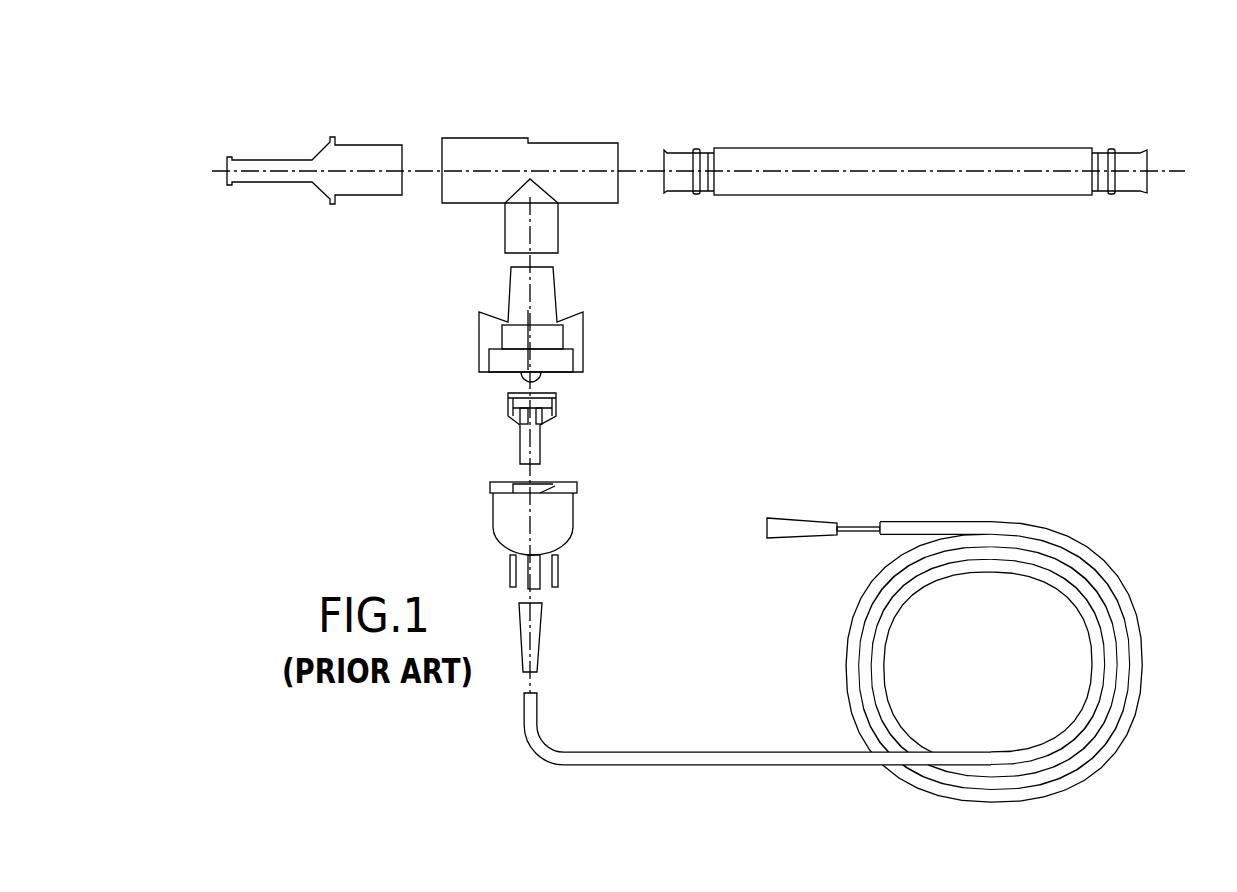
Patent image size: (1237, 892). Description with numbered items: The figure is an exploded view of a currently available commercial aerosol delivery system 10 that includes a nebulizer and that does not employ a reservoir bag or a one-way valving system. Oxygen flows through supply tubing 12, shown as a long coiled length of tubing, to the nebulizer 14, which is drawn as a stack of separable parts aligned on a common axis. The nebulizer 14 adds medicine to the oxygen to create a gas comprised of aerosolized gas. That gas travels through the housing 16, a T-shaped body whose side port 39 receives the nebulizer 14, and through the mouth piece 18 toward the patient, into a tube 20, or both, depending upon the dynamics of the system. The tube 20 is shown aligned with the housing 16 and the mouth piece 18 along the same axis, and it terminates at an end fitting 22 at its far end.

The aerosol delivery system 10 is at (441, 376).
The supply tubing 12 is at (966, 520).
The nebulizer 14 is at (611, 304).
The housing 16 is at (477, 138).
The mouth piece 18 is at (273, 160).
The tube 20 is at (825, 148).
The proximal end fitting 22 is at (1148, 160).
The side port of housing 39 is at (552, 254).